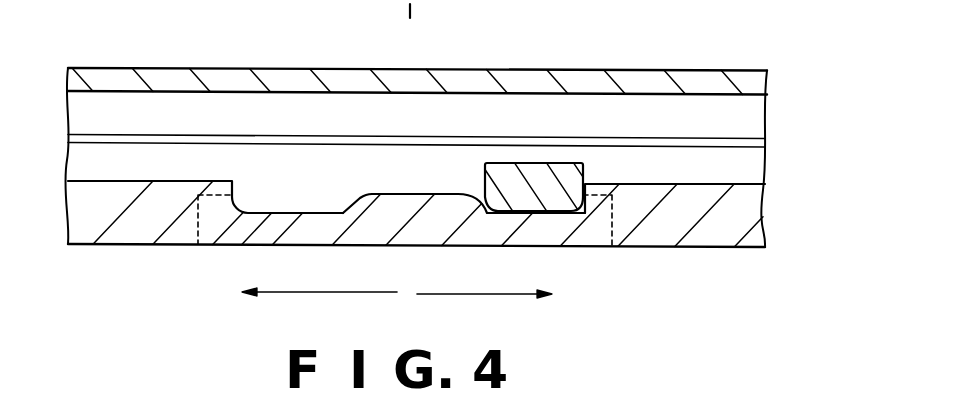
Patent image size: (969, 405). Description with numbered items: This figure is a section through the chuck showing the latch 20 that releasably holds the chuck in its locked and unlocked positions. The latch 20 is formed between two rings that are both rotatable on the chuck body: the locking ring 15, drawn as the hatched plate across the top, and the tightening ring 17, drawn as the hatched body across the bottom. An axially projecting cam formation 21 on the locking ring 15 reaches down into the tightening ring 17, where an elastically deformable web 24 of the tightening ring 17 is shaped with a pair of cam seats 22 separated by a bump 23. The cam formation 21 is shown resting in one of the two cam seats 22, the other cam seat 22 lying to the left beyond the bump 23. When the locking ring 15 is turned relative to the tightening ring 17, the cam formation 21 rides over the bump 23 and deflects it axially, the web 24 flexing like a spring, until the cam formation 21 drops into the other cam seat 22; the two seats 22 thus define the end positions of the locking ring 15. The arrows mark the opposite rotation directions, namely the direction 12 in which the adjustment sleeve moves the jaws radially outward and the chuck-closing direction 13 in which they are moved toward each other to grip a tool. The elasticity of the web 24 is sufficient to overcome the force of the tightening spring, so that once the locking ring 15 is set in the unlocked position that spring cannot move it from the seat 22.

The direction 12 is at (283, 295).
The chuck-closing direction 13 is at (498, 296).
The locking ring 15 is at (685, 80).
The tightening ring 17 is at (687, 212).
The latch 20 is at (290, 69).
The cam formation 21 is at (541, 178).
The cam seats 22 is at (276, 186).
The bump 23 is at (397, 212).
The elastically deformable web 24 is at (318, 229).